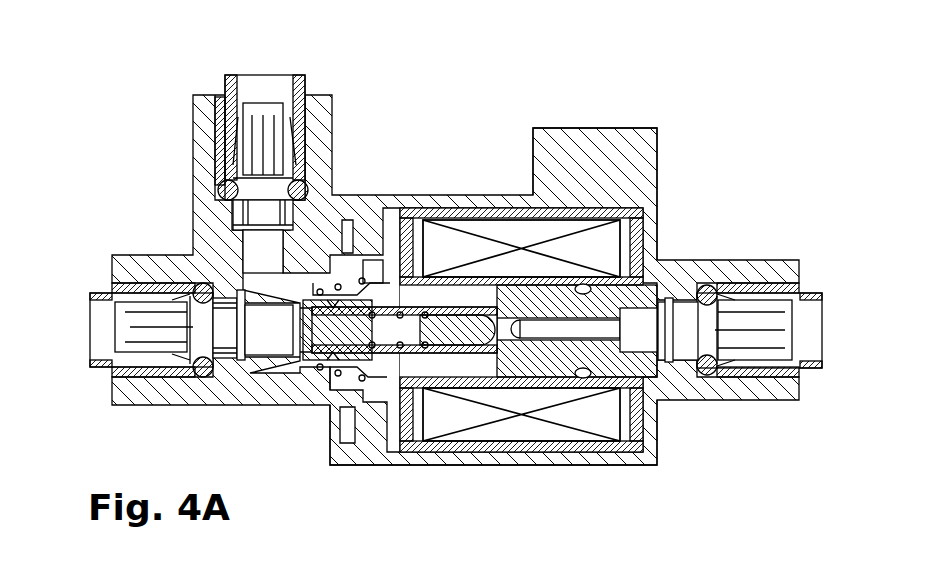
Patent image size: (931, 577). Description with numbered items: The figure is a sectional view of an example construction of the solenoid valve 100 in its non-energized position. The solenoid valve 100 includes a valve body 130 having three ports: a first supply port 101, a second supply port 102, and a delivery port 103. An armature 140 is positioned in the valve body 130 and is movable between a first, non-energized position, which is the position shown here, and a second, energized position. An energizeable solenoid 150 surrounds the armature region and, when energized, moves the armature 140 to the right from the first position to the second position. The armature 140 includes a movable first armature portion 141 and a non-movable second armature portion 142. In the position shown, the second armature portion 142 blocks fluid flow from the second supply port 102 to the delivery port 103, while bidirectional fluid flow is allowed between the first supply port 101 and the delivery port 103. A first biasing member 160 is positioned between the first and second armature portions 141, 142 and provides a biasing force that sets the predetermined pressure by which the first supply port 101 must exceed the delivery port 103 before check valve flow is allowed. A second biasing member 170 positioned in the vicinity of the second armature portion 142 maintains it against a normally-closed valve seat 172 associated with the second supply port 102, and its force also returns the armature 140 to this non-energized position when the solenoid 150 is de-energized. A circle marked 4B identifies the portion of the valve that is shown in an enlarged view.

The solenoid valve 100 is at (147, 129).
The first supply port 101 is at (808, 333).
The second supply port 102 is at (105, 328).
The delivery port 103 is at (265, 90).
The valve body 130 is at (620, 130).
The armature 140 is at (424, 306).
The first armature portion 141 is at (488, 322).
The second armature portion 142 is at (320, 370).
The solenoid 150 is at (605, 247).
The first biasing member 160 is at (400, 318).
The second biasing member 170 is at (338, 376).
The normally-closed valve seat 172 is at (305, 357).
The enlarged view portion 4B is at (497, 298).